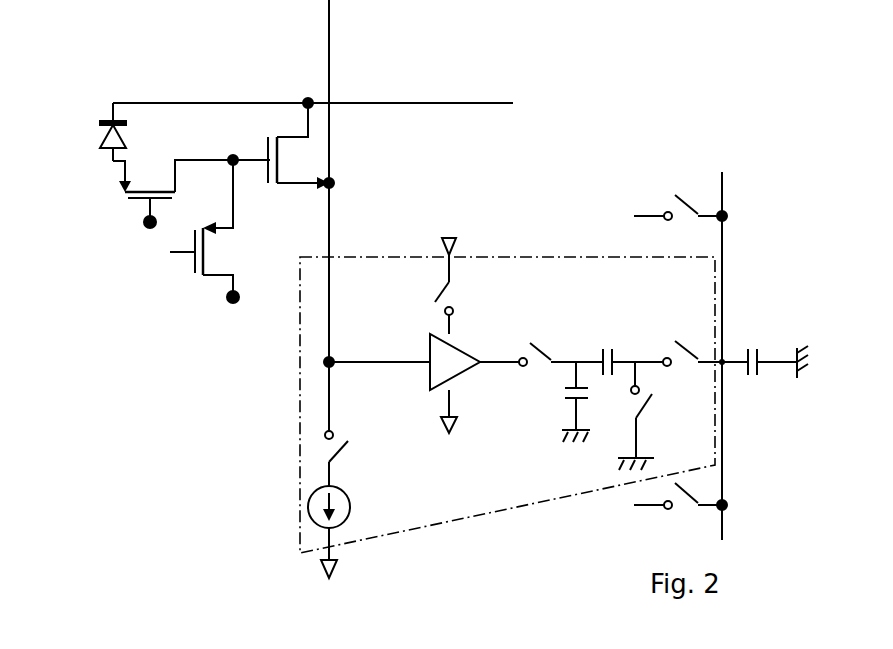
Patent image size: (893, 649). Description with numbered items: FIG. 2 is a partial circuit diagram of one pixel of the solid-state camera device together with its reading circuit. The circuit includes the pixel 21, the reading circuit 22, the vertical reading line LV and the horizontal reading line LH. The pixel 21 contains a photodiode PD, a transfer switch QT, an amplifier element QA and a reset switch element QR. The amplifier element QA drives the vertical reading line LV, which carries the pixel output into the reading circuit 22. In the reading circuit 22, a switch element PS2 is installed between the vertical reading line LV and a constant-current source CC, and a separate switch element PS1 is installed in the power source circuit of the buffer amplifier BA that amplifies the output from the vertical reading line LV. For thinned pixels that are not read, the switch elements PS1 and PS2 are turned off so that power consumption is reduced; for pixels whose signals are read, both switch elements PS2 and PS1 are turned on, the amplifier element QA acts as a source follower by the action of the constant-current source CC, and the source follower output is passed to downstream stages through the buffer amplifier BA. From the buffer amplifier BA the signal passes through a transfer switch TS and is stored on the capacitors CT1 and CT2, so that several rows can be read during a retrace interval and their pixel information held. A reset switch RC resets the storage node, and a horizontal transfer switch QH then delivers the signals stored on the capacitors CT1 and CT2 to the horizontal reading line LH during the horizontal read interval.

The pixel 21 is at (195, 68).
The reading circuit 22 is at (445, 528).
The vertical reading line LV is at (330, 38).
The horizontal reading line LH is at (724, 250).
The photodiode PD is at (88, 132).
The transfer switch QT is at (191, 178).
The amplifier element QA is at (292, 146).
The reset switch element QR is at (211, 231).
The buffer amplifier BA is at (430, 378).
The switch element PS1 is at (413, 286).
The switch element PS2 is at (364, 424).
The constant-current source CC is at (307, 513).
The transfer switch TS is at (549, 335).
The capacitor CT1 is at (547, 402).
The capacitor CT2 is at (625, 348).
The horizontal transfer switch QH is at (701, 334).
The reset switch RC is at (656, 416).